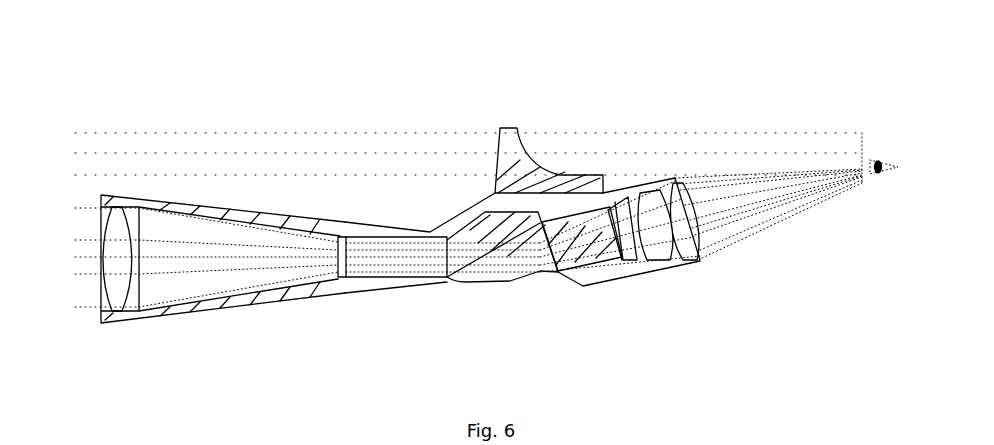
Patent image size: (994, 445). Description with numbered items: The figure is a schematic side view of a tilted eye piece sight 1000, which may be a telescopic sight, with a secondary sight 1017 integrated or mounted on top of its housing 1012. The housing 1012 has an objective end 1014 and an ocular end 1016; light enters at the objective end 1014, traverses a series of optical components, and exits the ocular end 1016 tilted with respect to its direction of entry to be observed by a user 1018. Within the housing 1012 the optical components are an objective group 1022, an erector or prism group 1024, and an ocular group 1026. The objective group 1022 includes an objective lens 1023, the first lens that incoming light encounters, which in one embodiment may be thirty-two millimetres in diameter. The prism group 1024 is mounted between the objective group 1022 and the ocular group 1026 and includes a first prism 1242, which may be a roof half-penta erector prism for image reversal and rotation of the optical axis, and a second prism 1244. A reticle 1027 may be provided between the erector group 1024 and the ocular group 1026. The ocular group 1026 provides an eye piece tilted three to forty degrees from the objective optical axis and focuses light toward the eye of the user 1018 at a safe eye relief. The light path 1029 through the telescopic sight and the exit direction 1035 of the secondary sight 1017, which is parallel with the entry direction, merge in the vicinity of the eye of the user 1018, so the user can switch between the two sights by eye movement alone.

The sight 1000 is at (208, 105).
The light path of the secondary sight 1035 is at (366, 150).
The objective end 1014 is at (85, 227).
The objective group 1022 is at (115, 335).
The objective lens 1023 is at (115, 211).
The light path of the telescopic sight 1029 is at (222, 255).
The housing 1012 is at (383, 287).
The erector or prism group 1024 is at (558, 348).
The first prism 1242 is at (467, 264).
The second prism 1244 is at (533, 260).
The reticle 1027 is at (577, 254).
The secondary sight 1017 is at (509, 132).
The ocular end 1016 is at (706, 250).
The ocular group 1026 is at (707, 272).
The user 1018 is at (880, 140).